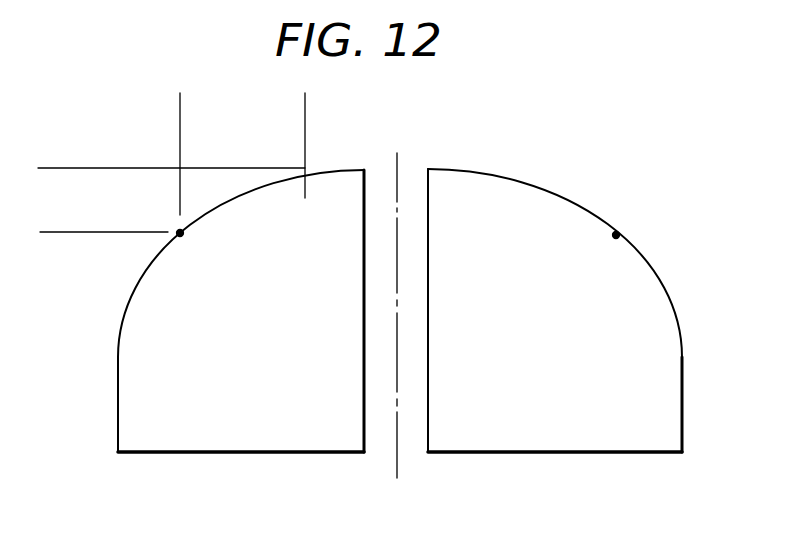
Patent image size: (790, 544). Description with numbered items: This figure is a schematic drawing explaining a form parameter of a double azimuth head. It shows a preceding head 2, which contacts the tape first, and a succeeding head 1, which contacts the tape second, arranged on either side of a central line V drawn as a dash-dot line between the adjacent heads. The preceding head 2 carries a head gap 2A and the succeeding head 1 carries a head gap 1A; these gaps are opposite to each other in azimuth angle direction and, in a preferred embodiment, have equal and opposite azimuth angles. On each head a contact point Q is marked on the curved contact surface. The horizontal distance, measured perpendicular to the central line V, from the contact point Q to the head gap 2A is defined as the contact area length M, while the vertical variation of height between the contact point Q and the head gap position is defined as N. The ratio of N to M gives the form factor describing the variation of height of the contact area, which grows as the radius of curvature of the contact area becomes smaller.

The succeeding head 1 is at (537, 441).
The preceding head 2 is at (275, 441).
The head gap 1A is at (488, 196).
The head gap 2A is at (306, 169).
The contact point Q is at (178, 235).
The central line V is at (397, 444).
The contact area length M is at (305, 108).
The variation of height N is at (57, 130).